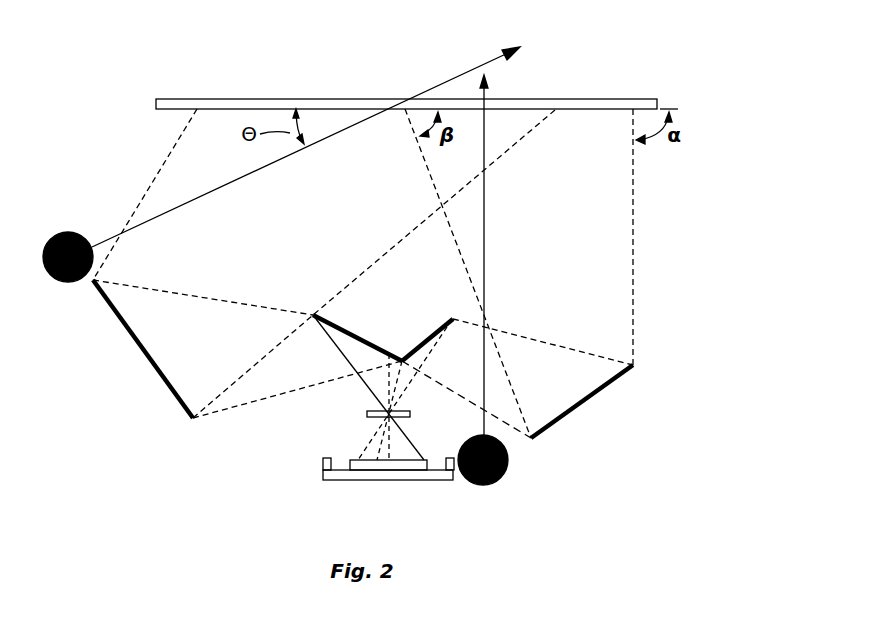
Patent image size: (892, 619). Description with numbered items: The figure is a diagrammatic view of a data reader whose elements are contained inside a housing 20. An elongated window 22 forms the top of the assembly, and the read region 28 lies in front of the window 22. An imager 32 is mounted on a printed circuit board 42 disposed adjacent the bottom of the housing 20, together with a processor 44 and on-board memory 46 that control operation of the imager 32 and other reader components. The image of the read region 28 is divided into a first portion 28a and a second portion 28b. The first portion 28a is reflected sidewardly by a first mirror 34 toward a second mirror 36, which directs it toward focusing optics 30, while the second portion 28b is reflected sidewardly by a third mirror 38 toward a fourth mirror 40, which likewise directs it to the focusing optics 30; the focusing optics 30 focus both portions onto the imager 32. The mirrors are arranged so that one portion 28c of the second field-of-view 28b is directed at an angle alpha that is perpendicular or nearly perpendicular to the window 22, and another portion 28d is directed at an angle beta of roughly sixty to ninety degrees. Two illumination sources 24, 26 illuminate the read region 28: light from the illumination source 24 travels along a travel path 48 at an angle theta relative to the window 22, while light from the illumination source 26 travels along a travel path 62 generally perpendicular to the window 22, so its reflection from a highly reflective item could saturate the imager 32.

The housing 20 is at (720, 104).
The window 22 is at (283, 98).
The illumination source 24 is at (62, 282).
The illumination source 26 is at (507, 474).
The read region 28 is at (388, 73).
The first portion 28a is at (185, 165).
The second portion 28b is at (620, 213).
The portion of field-of-view 28c is at (636, 183).
The portion of field-of-view 28d is at (418, 158).
The focusing optics 30 is at (367, 414).
The imager 32 is at (410, 460).
The first mirror 34 is at (165, 387).
The second mirror 36 is at (338, 323).
The third mirror 38 is at (607, 390).
The fourth mirror 40 is at (432, 327).
The printed circuit board 42 is at (323, 475).
The processor 44 is at (328, 458).
The memory 46 is at (448, 458).
The travel path 48 is at (228, 183).
The travel path 62 is at (486, 262).